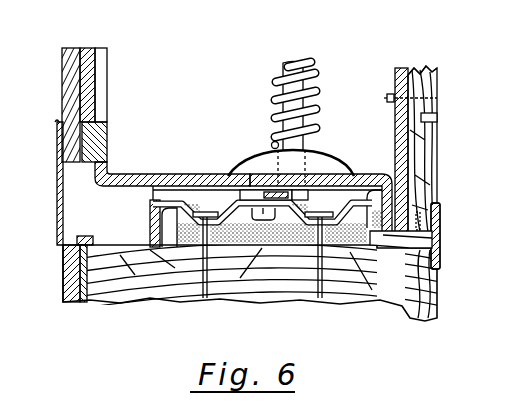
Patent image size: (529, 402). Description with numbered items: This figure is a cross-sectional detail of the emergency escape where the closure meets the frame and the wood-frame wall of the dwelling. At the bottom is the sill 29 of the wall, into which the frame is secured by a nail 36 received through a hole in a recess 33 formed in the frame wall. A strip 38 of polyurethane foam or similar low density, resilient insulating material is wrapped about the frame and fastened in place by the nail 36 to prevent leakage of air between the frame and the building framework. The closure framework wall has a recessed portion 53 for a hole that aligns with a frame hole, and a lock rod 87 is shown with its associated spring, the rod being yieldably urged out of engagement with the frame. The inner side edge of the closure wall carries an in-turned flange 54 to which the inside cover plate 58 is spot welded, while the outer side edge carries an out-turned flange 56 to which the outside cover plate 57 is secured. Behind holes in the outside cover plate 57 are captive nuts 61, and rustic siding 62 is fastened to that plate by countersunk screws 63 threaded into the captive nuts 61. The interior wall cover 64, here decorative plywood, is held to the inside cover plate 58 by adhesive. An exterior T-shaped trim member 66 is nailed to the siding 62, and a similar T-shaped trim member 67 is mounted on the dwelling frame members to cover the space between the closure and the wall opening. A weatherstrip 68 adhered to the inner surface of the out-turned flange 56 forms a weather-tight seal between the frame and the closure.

The sill 29 is at (143, 280).
The recess 33 is at (345, 178).
The nail 36 is at (207, 193).
The strip of polyurethane foam 38 is at (165, 242).
The recessed portion 53 is at (250, 165).
The in-turned flange 54 is at (100, 137).
The out-turned flange 56 is at (430, 177).
The outside cover plate 57 is at (402, 70).
The inside cover plate 58 is at (90, 48).
The captive nut 61 is at (392, 93).
The rustic siding 62 is at (422, 78).
The countersunk screw 63 is at (430, 97).
The interior wall cover 64 is at (70, 48).
The exterior T-shaped trim member 66 is at (440, 232).
The T-shaped trim member 67 is at (59, 192).
The weatherstrip 68 is at (437, 248).
The lock rod 87 is at (282, 67).